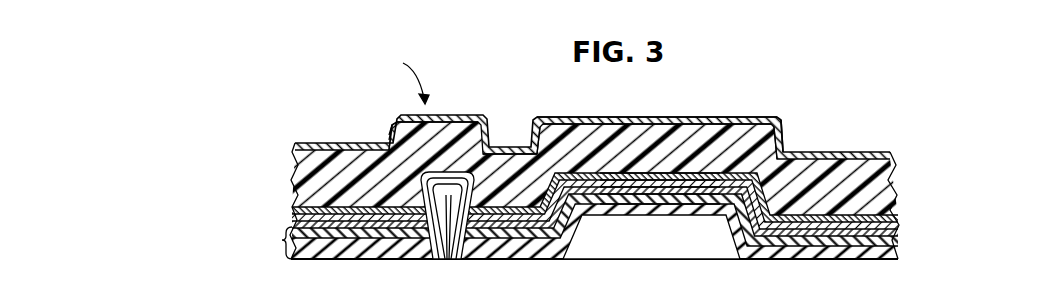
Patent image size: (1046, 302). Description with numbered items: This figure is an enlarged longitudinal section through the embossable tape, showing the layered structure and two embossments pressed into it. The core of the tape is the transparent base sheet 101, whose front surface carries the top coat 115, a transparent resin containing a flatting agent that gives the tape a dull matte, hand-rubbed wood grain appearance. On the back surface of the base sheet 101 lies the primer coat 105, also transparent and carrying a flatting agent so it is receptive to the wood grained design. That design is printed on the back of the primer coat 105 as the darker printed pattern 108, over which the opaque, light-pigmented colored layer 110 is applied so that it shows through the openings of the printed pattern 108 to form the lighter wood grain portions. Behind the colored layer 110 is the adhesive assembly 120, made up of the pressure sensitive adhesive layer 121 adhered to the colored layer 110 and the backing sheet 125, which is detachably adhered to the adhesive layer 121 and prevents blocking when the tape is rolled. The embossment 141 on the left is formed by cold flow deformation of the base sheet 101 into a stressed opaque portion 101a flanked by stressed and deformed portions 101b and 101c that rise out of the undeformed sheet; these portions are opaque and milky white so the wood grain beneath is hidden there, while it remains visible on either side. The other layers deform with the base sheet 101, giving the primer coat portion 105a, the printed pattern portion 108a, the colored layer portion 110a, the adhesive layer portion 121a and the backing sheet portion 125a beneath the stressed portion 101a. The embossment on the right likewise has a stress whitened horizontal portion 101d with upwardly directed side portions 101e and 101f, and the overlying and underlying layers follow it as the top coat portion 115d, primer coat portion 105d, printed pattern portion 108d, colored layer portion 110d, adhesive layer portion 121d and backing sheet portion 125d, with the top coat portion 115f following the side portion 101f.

The base sheet 101 is at (302, 175).
The stressed opaque portion 101a is at (428, 137).
The stressed and deformed portion 101b is at (395, 130).
The stressed and deformed portion 101c is at (490, 133).
The horizontally disposed portion 101d is at (628, 140).
The upwardly directed side portion 101e is at (537, 163).
The upwardly directed side portion 101f is at (775, 132).
The primer coat 105 is at (298, 207).
The primer coat deformed portion 105a is at (403, 117).
The primer coat deformed portion 105d is at (585, 178).
The printed pattern 108 is at (293, 213).
The printed pattern deformed portion 108a is at (397, 123).
The printed pattern deformed portion 108d is at (578, 185).
The colored layer 110 is at (295, 222).
The colored layer deformed portion 110a is at (430, 208).
The colored layer deformed portion 110d is at (725, 191).
The top coat 115 is at (308, 143).
The top coat deformed portion 115d is at (713, 100).
The top coat deformed portion 115f is at (780, 137).
The adhesive assembly 120 is at (282, 240).
The pressure sensitive adhesive layer 121 is at (336, 245).
The adhesive layer deformed portion 121a is at (440, 225).
The adhesive layer deformed portion 121d is at (746, 225).
The backing sheet 125 is at (310, 250).
The backing sheet deformed portion 125a is at (447, 207).
The backing sheet deformed portion 125d is at (662, 210).
The embossment 141 is at (404, 76).